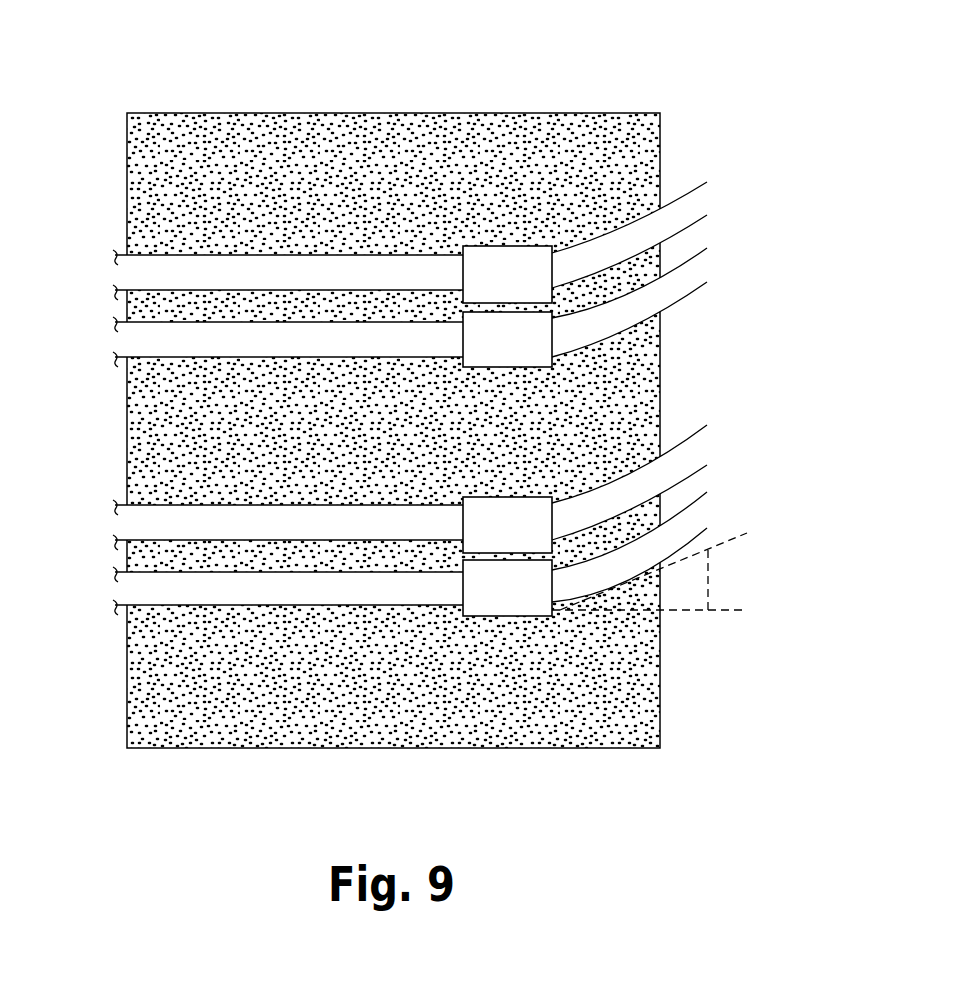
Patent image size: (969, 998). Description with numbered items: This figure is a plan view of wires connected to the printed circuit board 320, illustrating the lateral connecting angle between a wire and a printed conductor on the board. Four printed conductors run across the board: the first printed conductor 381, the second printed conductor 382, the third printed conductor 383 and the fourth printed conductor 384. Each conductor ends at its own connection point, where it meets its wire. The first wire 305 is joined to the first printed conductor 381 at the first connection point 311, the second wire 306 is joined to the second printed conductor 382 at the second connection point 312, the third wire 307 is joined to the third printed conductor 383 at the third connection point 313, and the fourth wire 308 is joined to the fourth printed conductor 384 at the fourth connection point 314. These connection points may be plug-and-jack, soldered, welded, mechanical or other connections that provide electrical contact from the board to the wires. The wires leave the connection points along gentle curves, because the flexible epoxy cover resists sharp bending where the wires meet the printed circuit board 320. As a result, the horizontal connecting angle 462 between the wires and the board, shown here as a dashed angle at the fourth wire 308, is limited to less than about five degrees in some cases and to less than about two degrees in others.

The printed circuit board 320 is at (280, 113).
The first connection point 311 is at (538, 258).
The second connection point 312 is at (478, 320).
The third connection point 313 is at (482, 547).
The fourth connection point 314 is at (532, 610).
The first wire 305 is at (652, 230).
The second wire 306 is at (652, 302).
The third wire 307 is at (656, 472).
The fourth wire 308 is at (656, 539).
The first printed conductor 381 is at (130, 272).
The second printed conductor 382 is at (130, 337).
The third printed conductor 383 is at (130, 522).
The fourth printed conductor 384 is at (130, 586).
The horizontal connecting angle 462 is at (712, 578).